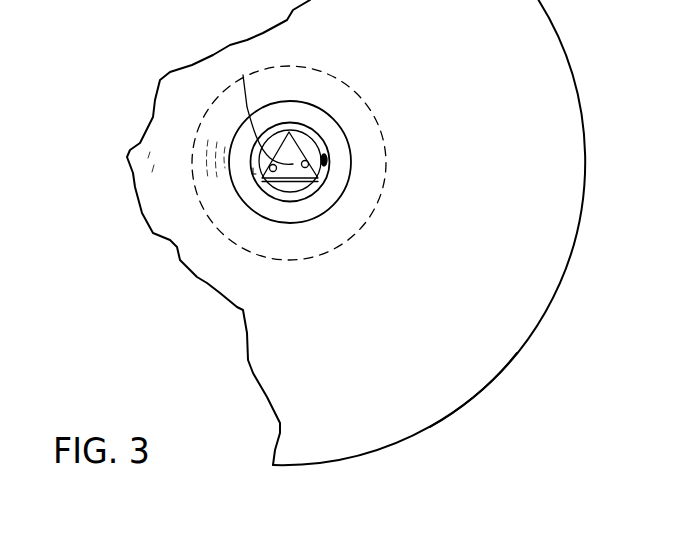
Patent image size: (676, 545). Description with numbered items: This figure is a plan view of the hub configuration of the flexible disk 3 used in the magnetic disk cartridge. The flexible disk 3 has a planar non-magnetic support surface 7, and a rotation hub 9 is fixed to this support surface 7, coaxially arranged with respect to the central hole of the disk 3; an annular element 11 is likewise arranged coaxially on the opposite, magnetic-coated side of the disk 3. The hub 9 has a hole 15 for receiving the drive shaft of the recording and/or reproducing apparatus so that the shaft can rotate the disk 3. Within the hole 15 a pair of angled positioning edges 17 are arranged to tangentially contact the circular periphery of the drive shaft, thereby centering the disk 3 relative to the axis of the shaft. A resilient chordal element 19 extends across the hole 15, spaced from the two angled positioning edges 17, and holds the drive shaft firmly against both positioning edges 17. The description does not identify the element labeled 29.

The flexible disk 3 is at (517, 354).
The planar non-magnetic support surface 7 is at (398, 415).
The rotation hub 9 is at (271, 202).
The annular element 11 is at (330, 74).
The hole 15 is at (243, 75).
The angled positioning edges 17 is at (270, 165).
The resilient chordal element 19 is at (297, 183).
The peripheral edge 29 is at (468, 403).